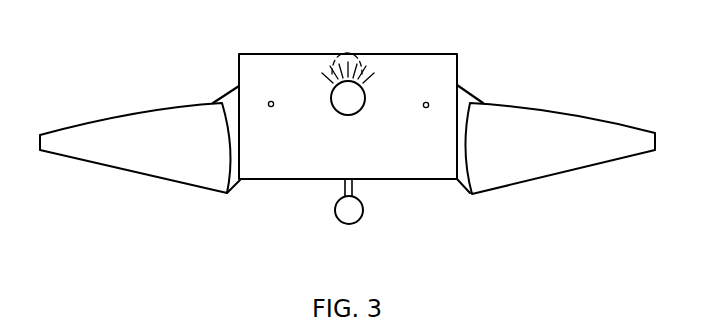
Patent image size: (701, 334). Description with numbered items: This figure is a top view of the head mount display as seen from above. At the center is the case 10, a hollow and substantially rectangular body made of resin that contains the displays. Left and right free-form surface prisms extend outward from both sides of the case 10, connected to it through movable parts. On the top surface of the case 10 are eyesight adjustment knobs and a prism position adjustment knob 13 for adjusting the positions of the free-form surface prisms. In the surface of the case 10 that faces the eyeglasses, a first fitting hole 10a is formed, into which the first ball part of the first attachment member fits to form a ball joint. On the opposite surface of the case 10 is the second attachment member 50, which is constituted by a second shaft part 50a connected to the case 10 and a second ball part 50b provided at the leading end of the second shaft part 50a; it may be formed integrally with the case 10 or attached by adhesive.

The case 10 is at (377, 54).
The first fitting hole 10a is at (331, 53).
The prism position adjustment knob 13 is at (346, 116).
The second attachment member 50 is at (366, 228).
The second shaft part 50a is at (345, 194).
The second ball part 50b is at (350, 224).